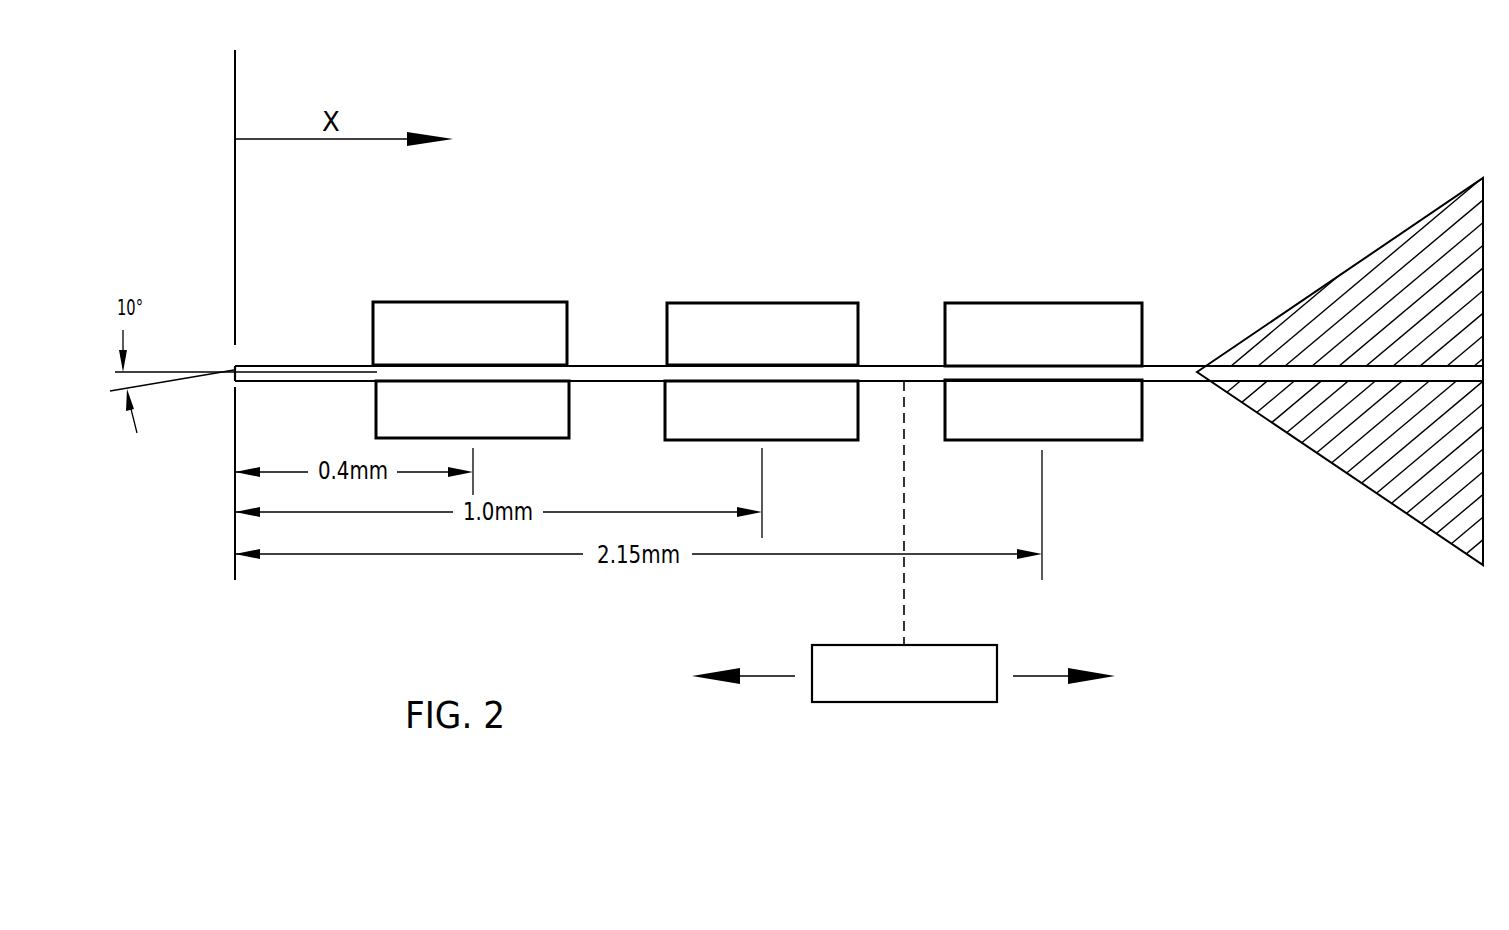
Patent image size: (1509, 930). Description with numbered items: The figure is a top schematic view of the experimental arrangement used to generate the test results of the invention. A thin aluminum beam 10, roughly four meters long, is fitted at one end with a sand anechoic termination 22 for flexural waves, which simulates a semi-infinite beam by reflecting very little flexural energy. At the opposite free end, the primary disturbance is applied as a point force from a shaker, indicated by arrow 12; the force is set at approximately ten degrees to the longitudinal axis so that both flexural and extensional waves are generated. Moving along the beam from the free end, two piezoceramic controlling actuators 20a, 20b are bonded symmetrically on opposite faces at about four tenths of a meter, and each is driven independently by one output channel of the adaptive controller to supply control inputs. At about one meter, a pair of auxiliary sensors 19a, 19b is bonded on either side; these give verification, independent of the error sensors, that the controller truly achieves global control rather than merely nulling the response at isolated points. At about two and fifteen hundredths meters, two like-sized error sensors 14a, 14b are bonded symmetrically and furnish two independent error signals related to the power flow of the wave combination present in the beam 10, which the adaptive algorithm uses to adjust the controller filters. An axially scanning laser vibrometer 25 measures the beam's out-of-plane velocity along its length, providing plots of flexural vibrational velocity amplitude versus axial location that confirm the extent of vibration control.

The thin aluminum beam 10 is at (859, 262).
The arrow indicating primary force 12 is at (172, 448).
The error sensor 14a is at (1049, 283).
The error sensor 14b is at (1084, 467).
The auxiliary sensor 19a is at (778, 282).
The auxiliary sensor 19b is at (770, 444).
The controlling actuator 20a is at (493, 282).
The controlling actuator 20b is at (495, 435).
The sand anechoic termination 22 is at (1173, 372).
The laser vibrometer 25 is at (903, 564).